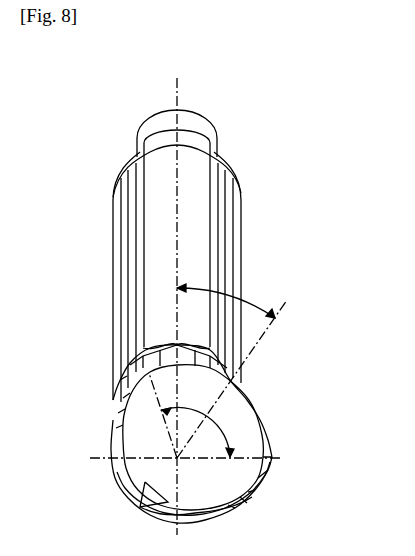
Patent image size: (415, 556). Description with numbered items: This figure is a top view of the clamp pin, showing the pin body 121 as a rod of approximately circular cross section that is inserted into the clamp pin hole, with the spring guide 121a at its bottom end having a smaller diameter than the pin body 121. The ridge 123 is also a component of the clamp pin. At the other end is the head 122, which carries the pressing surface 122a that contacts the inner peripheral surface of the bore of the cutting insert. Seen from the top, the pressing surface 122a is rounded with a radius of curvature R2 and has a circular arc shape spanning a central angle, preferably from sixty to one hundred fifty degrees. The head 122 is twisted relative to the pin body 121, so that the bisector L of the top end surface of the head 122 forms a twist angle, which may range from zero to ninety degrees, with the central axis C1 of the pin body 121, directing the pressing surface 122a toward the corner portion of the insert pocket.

The pin body 121 is at (232, 239).
The spring guide 121a is at (197, 123).
The head 122 is at (248, 438).
The pressing surface 122a is at (262, 406).
The ridge 123 is at (155, 226).
The radius of curvature R2 is at (268, 414).
The central axis of the pin body C1 is at (175, 295).
The bisector L is at (239, 370).